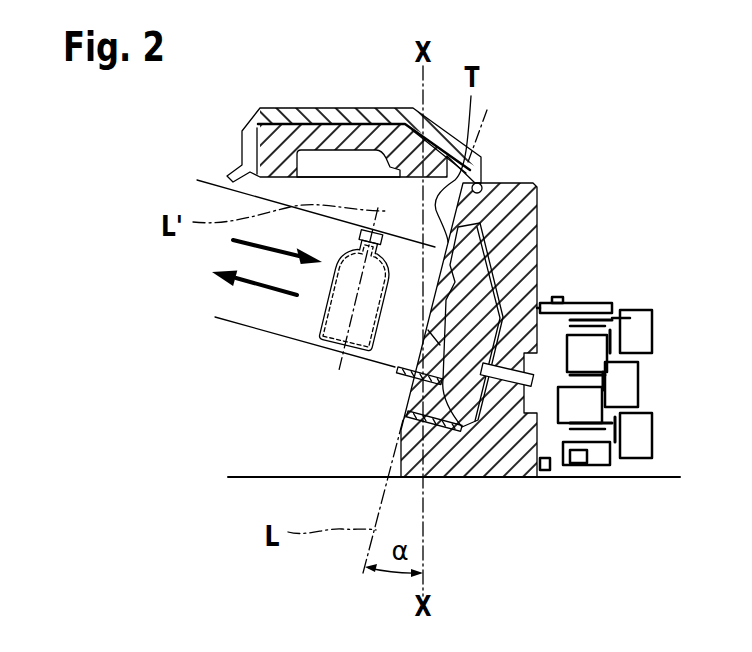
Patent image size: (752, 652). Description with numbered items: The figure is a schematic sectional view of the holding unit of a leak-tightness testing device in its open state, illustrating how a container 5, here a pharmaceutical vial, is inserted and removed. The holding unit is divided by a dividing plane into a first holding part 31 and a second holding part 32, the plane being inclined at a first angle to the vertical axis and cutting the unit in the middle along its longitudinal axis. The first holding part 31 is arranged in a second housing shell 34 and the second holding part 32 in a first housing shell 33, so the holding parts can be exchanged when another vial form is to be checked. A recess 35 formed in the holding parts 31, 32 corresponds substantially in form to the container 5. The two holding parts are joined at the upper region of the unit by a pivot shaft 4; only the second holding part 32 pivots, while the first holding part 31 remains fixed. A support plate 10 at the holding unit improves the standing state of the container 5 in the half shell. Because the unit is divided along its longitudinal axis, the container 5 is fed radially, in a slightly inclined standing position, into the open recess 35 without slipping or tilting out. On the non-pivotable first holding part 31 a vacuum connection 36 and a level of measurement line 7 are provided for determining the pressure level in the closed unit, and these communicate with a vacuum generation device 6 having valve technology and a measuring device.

The pivot shaft 4 is at (483, 186).
The container 5 is at (318, 320).
The vacuum generation device 6 is at (593, 305).
The level of measurement line 7 is at (500, 377).
The support plate 10 is at (400, 377).
The first holding part 31 is at (520, 237).
The second holding part 32 is at (266, 152).
The first housing shell 33 is at (273, 113).
The second housing shell 34 is at (527, 208).
The recess 35 is at (437, 345).
The vacuum connection 36 is at (463, 427).